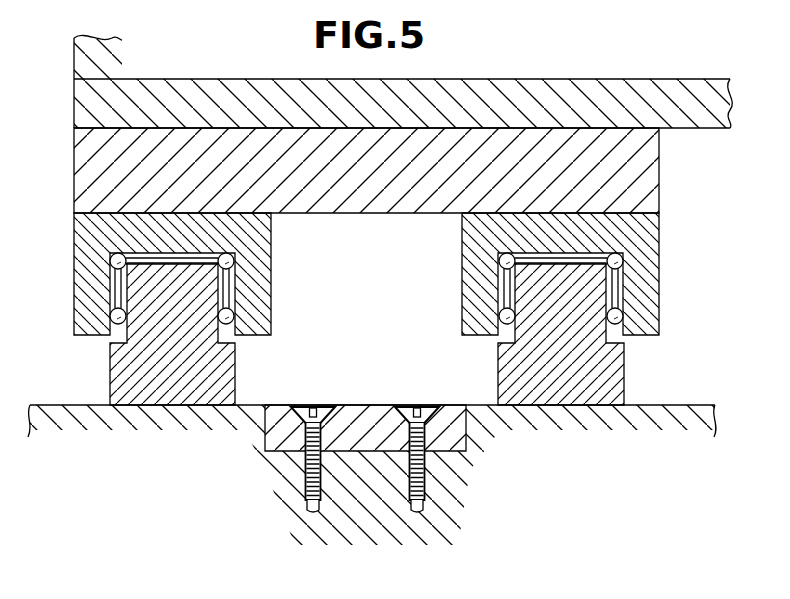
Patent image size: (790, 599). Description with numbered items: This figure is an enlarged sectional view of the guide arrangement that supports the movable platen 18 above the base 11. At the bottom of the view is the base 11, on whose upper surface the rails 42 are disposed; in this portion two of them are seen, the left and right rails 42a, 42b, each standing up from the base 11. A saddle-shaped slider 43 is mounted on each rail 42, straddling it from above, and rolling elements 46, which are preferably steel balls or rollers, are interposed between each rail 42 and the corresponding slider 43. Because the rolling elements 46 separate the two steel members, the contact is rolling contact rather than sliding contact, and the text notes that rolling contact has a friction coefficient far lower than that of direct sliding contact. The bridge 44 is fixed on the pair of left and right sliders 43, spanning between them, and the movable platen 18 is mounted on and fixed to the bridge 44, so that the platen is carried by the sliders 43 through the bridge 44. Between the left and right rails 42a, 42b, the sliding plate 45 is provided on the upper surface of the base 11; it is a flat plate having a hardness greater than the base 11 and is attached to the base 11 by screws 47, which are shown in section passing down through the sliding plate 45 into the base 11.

The movable platen 18 is at (90, 83).
The bridge 44 is at (655, 172).
The slider 43 is at (91, 292).
The rolling element 46 is at (111, 264).
The rail 42 is at (367, 369).
The rail 42a is at (172, 396).
The rail 42b is at (555, 396).
The screw 47 is at (410, 405).
The sliding plate 45 is at (362, 432).
The base 11 is at (692, 405).